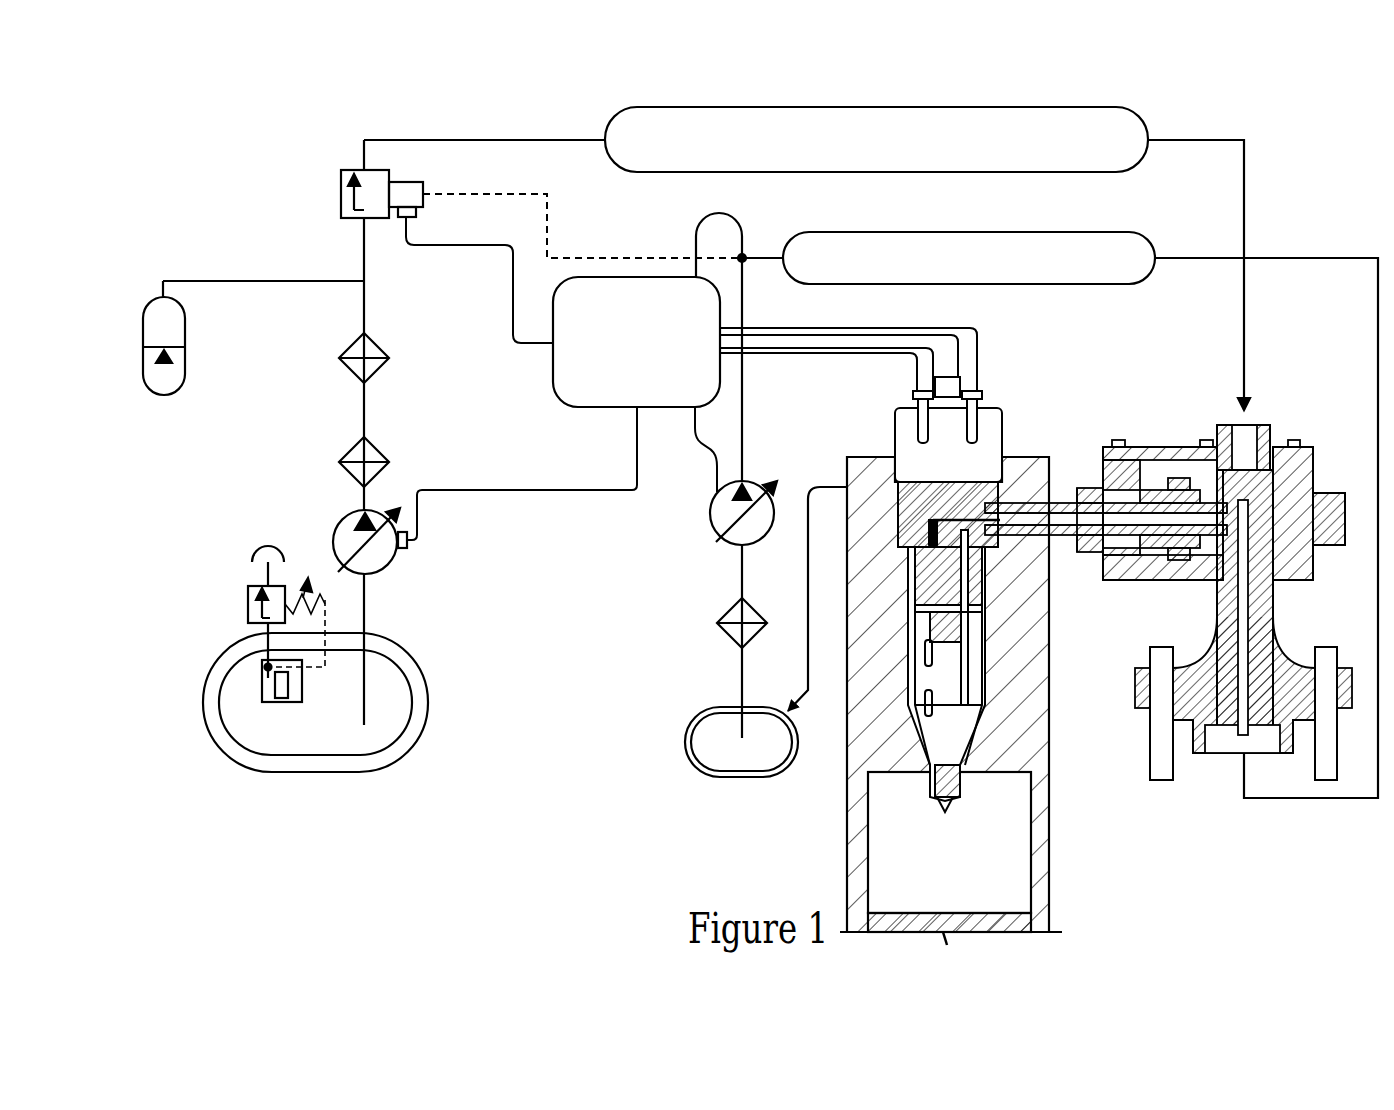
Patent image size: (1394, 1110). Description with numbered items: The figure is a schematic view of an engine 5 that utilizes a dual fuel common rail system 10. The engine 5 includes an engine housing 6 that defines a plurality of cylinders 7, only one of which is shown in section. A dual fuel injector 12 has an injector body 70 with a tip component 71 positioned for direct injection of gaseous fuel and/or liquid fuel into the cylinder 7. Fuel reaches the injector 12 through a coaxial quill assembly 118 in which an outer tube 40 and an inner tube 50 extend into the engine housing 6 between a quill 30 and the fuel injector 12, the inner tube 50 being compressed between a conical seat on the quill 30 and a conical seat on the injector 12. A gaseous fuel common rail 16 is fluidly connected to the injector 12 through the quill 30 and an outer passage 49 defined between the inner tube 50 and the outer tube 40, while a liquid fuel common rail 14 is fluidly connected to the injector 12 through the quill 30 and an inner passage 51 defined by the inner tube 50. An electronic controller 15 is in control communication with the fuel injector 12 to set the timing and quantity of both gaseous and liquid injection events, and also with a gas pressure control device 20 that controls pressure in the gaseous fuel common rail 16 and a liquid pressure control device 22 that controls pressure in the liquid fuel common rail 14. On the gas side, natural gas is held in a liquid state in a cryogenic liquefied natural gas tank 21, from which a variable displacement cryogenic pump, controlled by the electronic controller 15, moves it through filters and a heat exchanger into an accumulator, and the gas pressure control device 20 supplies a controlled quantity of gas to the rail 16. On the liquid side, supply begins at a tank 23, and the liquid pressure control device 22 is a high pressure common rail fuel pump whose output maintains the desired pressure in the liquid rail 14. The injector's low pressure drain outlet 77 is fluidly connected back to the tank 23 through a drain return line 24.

The dual fuel common rail system 10 is at (1297, 148).
The dual fuel injector 12 is at (936, 580).
The liquid fuel common rail 14 is at (1120, 283).
The electronic controller 15 is at (580, 407).
The gaseous fuel common rail 16 is at (1120, 172).
The gas pressure control device 20 is at (310, 232).
The cryogenic liquefied natural gas tank 21 is at (203, 700).
The liquid pressure control device 22 is at (684, 540).
The tank 23 is at (685, 740).
The drain return line 24 is at (808, 572).
The engine 5 is at (1106, 496).
The engine housing 6 is at (1049, 640).
The cylinder 7 is at (1030, 812).
The quill 30 is at (1270, 427).
The outer tube 40 is at (1058, 540).
The outer passage 49 is at (1083, 490).
The inner tube 50 is at (1060, 500).
The inner passage 51 is at (1158, 522).
The injector body 70 is at (906, 700).
The tip component 71 is at (958, 784).
The drain outlet 77 is at (893, 466).
The coaxial quill assembly 118 is at (1274, 417).